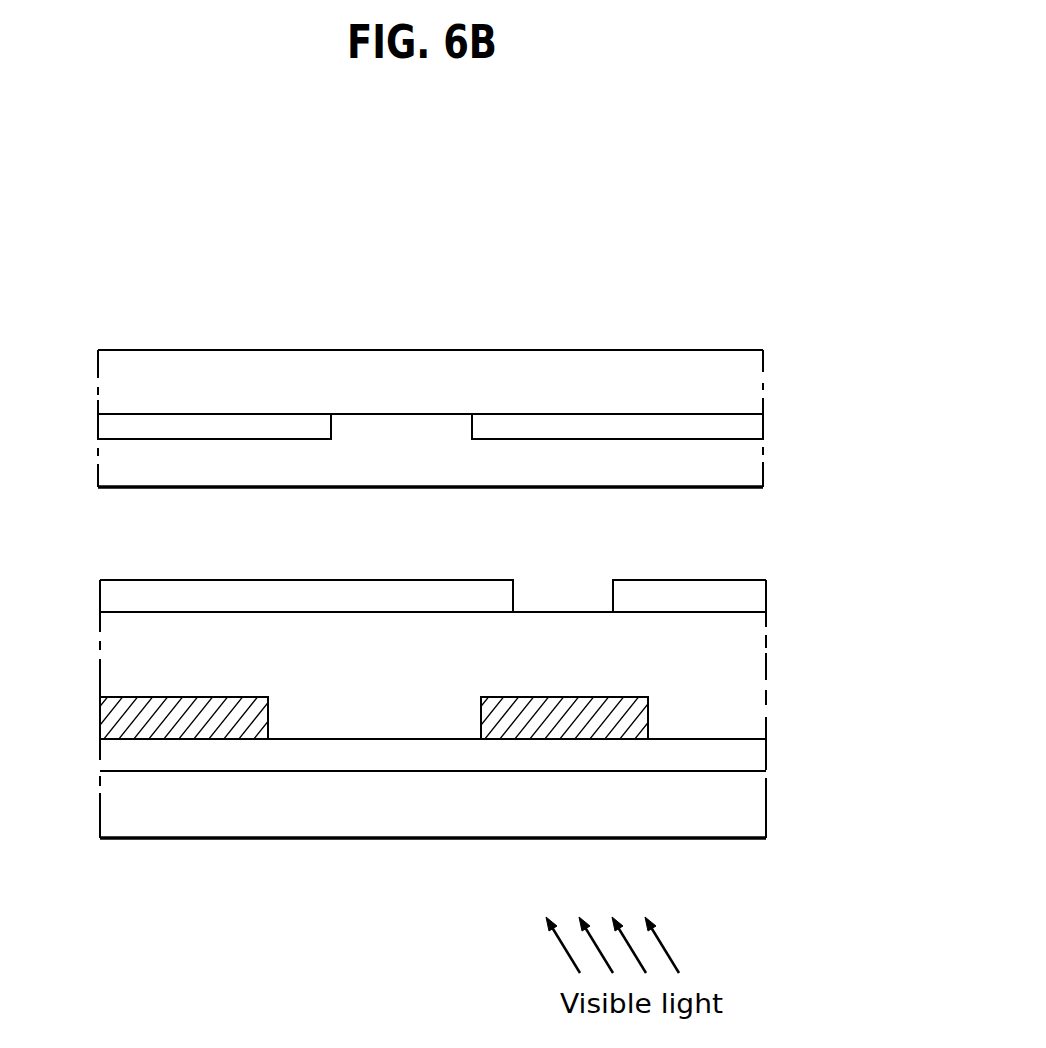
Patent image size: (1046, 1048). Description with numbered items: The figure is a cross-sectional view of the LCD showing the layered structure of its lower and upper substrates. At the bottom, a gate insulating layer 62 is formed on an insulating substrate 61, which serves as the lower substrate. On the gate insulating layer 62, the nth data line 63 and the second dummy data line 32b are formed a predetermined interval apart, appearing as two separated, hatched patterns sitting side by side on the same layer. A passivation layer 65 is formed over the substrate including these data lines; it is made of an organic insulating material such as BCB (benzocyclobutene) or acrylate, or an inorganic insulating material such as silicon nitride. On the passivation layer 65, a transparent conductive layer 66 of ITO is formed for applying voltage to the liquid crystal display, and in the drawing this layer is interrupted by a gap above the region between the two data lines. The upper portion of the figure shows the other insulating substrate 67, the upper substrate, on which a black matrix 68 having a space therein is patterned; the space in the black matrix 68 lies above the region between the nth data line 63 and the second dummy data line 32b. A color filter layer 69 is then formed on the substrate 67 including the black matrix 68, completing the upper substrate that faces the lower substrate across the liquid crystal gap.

The insulating substrate 67 is at (757, 382).
The black matrix 68 is at (757, 426).
The color filter layer 69 is at (757, 467).
The transparent conductive layer 66 is at (760, 599).
The passivation layer 65 is at (760, 682).
The nth data line 63 is at (110, 711).
The second dummy data line 32b is at (560, 704).
The gate insulating layer 62 is at (760, 754).
The insulating substrate 61 is at (760, 811).